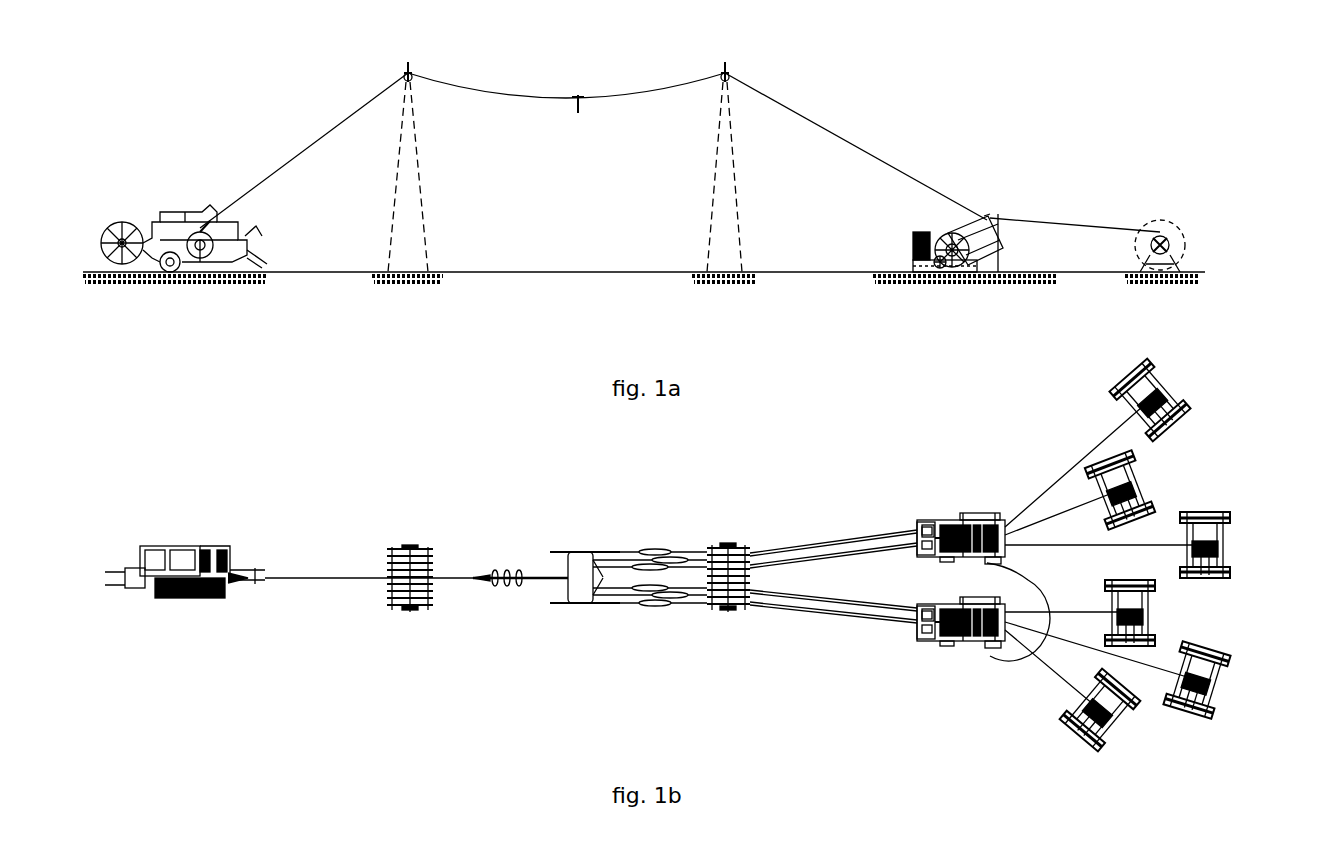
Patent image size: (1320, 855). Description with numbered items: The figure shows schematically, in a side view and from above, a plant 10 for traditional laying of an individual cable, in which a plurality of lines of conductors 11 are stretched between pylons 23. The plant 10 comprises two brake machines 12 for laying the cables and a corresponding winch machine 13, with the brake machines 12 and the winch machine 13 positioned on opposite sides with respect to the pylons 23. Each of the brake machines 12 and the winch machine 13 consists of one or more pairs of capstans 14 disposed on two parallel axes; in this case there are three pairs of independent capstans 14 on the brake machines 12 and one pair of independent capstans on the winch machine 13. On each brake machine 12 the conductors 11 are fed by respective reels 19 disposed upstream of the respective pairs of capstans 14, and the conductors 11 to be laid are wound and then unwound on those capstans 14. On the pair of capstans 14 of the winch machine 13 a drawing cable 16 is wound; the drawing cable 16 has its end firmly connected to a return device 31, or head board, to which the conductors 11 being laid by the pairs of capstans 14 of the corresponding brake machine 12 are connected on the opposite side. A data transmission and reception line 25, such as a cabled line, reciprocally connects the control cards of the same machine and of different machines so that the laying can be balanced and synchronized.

In FIG. 1B, the plant 10 is at (510, 366).
In FIG. 1A, the conductors 11 is at (873, 163).
In FIG. 1B, the conductors 11 is at (812, 543).
In FIG. 1A, the brake machines 12 is at (936, 256).
In FIG. 1B, the brake machines 12 is at (952, 580).
In FIG. 1A, the winch machines 13 is at (192, 204).
In FIG. 1B, the winch machines 13 is at (190, 535).
In FIG. 1A, the capstans 14 is at (942, 268).
In FIG. 1B, the capstans 14 is at (940, 525).
In FIG. 1A, the drawing cable 16 is at (278, 172).
In FIG. 1B, the drawing cable 16 is at (320, 578).
In FIG. 1A, the reels 19 is at (1187, 214).
In FIG. 1B, the reels 19 is at (1180, 392).
In FIG. 1A, the pylons 23 is at (420, 200).
In FIG. 1B, the pylons 23 is at (568, 577).
In FIG. 1B, the data transmission and reception line 25 is at (1010, 577).
In FIG. 1A, the return device 31 is at (568, 88).
In FIG. 1B, the return device 31 is at (580, 545).